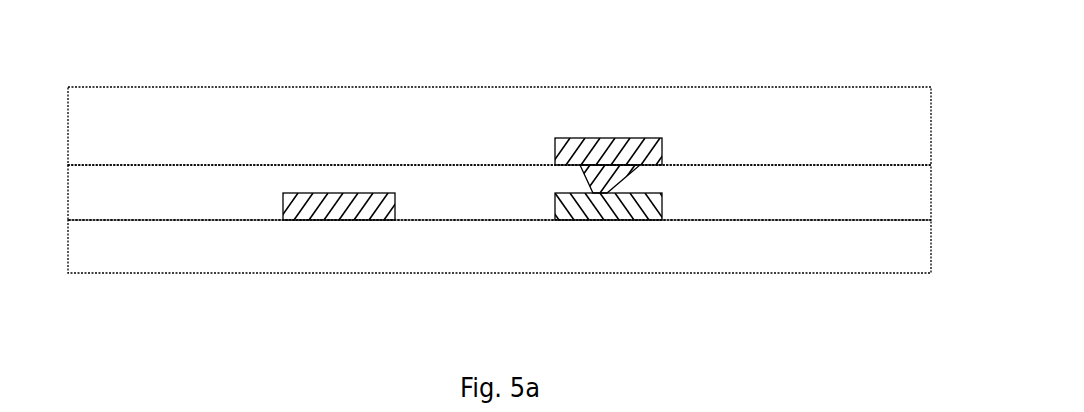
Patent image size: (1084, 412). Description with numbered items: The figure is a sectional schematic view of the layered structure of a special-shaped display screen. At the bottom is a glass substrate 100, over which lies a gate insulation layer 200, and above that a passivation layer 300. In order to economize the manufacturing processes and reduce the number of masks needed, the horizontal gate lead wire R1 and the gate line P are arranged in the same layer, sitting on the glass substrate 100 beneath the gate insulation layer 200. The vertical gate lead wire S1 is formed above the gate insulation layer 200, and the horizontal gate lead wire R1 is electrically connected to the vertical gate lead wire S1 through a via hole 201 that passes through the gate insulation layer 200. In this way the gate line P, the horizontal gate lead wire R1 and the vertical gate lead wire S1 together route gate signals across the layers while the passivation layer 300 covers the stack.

The glass substrate 100 is at (213, 238).
The gate insulation layer 200 is at (452, 209).
The via hole 201 is at (637, 177).
The passivation layer 300 is at (248, 138).
The gate line P is at (352, 192).
The vertical gate lead wire S1 is at (593, 165).
The horizontal gate lead wire R1 is at (603, 220).